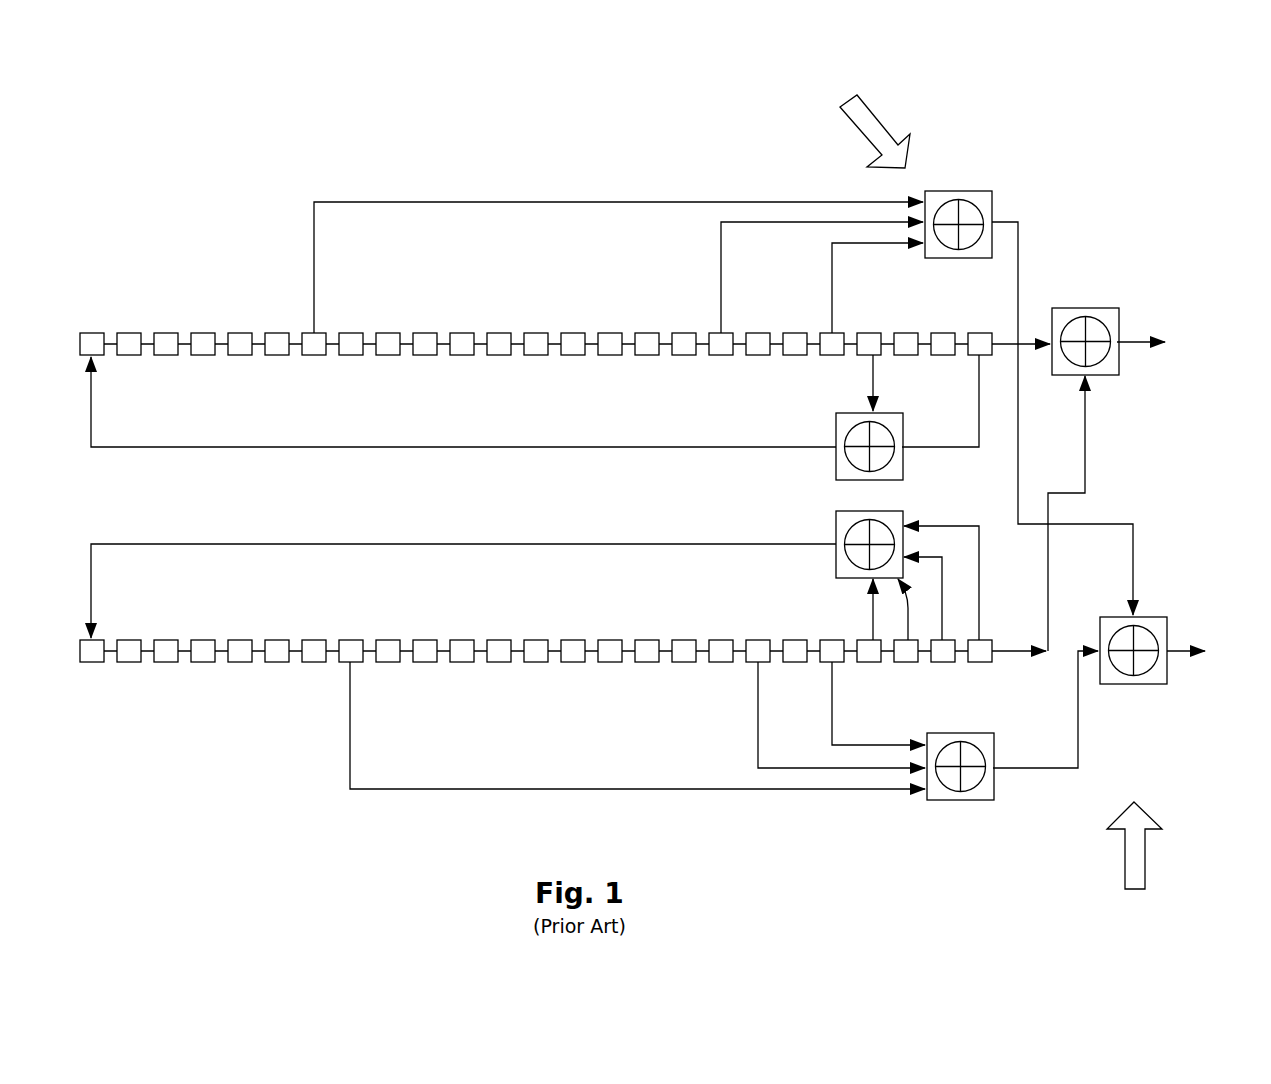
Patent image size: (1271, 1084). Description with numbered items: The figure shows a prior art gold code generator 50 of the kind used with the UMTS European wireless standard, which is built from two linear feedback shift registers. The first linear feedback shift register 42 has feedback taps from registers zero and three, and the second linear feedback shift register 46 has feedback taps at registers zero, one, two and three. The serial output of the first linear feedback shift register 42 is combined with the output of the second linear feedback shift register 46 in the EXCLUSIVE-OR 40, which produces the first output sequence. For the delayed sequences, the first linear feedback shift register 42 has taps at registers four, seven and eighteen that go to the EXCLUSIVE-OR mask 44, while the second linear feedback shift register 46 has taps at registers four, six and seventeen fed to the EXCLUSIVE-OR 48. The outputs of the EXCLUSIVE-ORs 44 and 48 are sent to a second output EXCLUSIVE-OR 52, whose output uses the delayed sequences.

The EXCLUSIVE-OR 40 is at (1058, 307).
The first linear feedback shift register 42 is at (195, 270).
The EXCLUSIVE-OR (mask) 44 is at (975, 191).
The second linear feedback shift register 46 is at (178, 525).
The EXCLUSIVE-OR 48 is at (973, 800).
The Gold code generator 50 is at (249, 212).
The second output EXCLUSIVE-OR 52 is at (1160, 617).